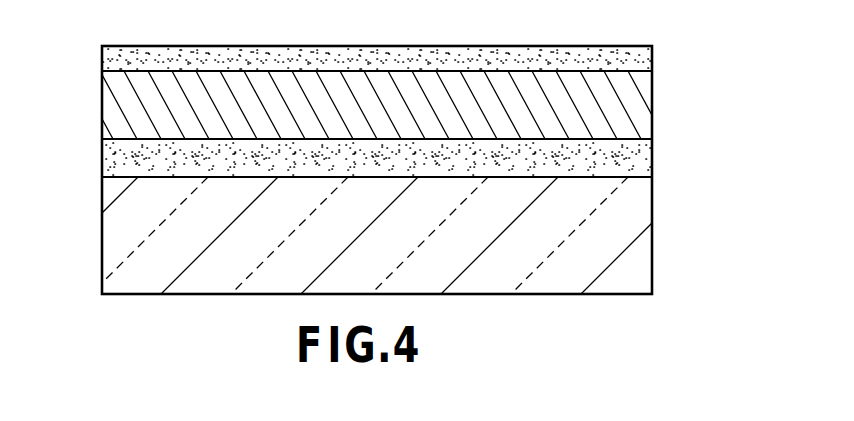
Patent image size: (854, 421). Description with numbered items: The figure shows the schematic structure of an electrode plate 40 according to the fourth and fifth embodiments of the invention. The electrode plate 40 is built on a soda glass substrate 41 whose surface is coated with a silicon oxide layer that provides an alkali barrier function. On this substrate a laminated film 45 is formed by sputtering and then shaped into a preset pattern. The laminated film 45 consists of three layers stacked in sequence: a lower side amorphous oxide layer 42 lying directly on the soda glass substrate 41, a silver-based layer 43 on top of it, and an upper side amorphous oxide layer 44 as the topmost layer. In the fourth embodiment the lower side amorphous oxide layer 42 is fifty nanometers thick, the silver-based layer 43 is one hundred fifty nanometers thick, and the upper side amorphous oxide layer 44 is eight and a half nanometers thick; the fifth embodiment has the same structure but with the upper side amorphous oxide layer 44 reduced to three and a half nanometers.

The electrode plate 40 is at (401, 168).
The soda glass substrate 41 is at (640, 258).
The lower side amorphous oxide layer 42 is at (102, 166).
The silver-based layer 43 is at (112, 108).
The upper side amorphous oxide layer 44 is at (102, 60).
The laminated film 45 is at (386, 112).